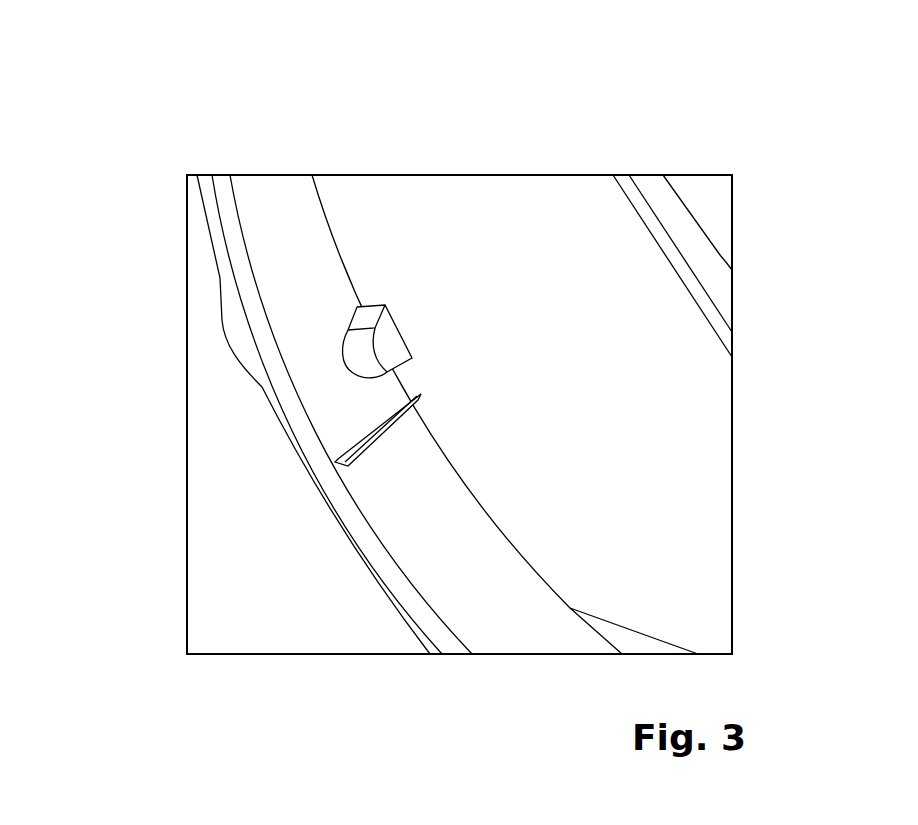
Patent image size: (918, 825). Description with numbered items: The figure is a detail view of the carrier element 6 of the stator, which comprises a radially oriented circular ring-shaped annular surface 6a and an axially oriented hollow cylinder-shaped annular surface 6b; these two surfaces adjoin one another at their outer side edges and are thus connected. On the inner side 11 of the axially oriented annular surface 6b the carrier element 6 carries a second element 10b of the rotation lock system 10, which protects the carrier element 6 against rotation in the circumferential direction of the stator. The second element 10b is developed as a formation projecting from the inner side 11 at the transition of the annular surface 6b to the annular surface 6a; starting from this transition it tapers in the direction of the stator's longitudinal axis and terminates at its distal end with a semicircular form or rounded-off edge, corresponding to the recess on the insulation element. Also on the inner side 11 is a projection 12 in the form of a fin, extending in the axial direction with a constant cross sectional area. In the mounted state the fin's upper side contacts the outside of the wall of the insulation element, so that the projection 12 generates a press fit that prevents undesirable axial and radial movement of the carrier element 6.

The carrier element 6 is at (797, 177).
The radially oriented circular ring-shaped annular surface 6a is at (667, 535).
The axially oriented hollow cylinder-shaped annular surface 6b is at (482, 592).
The rotation lock system 10 is at (226, 295).
The second element of the rotation lock system 10b is at (357, 355).
The inner side 11 is at (273, 225).
The projection 12 is at (352, 447).